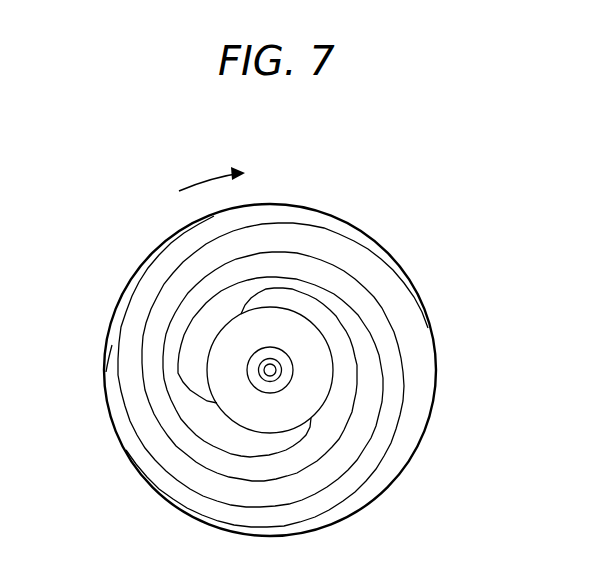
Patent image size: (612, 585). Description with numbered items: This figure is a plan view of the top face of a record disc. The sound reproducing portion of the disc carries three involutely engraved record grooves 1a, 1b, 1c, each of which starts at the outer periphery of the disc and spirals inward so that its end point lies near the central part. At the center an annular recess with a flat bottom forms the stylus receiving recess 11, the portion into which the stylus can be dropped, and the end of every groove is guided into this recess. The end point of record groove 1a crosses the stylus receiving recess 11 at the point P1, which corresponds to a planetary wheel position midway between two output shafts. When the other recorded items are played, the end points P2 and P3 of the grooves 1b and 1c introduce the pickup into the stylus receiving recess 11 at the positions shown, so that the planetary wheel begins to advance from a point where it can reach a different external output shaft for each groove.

The record groove 1a is at (283, 529).
The record groove 1b is at (378, 251).
The record groove 1c is at (111, 346).
The stylus receiving recess 11 is at (333, 362).
The end point of record groove 1a P1 is at (307, 399).
The end point of record groove 1b P2 is at (266, 325).
The end point of record groove 1c P3 is at (232, 391).